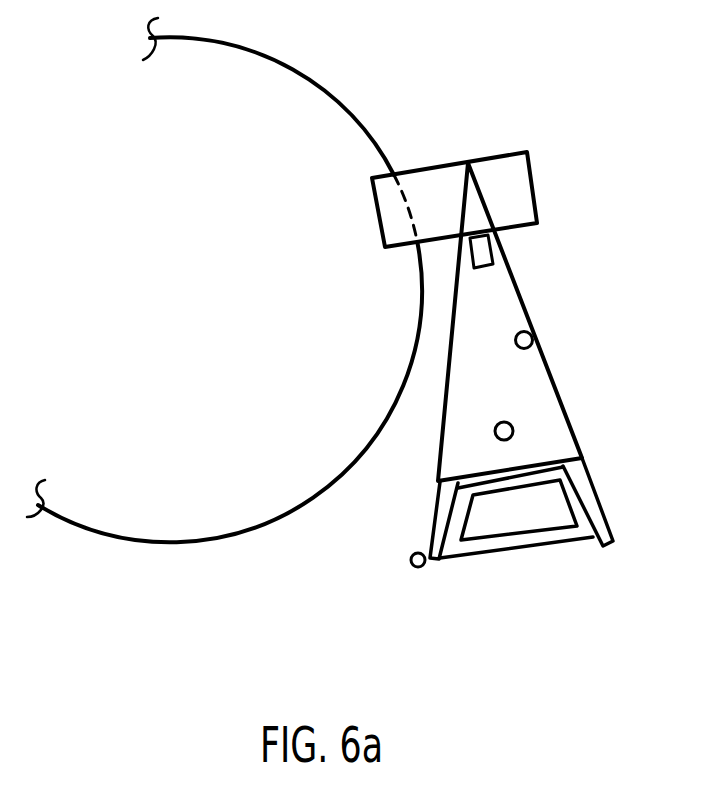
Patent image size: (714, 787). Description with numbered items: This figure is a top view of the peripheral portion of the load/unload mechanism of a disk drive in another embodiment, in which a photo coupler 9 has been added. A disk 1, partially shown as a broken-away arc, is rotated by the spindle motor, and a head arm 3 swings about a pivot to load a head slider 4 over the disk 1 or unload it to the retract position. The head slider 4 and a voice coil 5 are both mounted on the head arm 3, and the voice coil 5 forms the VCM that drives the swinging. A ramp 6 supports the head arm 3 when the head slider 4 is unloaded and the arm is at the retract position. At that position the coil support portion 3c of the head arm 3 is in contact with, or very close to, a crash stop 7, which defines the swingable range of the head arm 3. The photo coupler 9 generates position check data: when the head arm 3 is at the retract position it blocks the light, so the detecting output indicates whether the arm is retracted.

The disk 1 is at (222, 505).
The ramp 6 is at (488, 170).
The head arm 3 is at (562, 443).
The head slider 4 is at (490, 260).
The photo coupler 9 is at (534, 341).
The voice coil 5 is at (527, 538).
The coil support portion 3c is at (443, 561).
The crash stop 7 is at (411, 565).